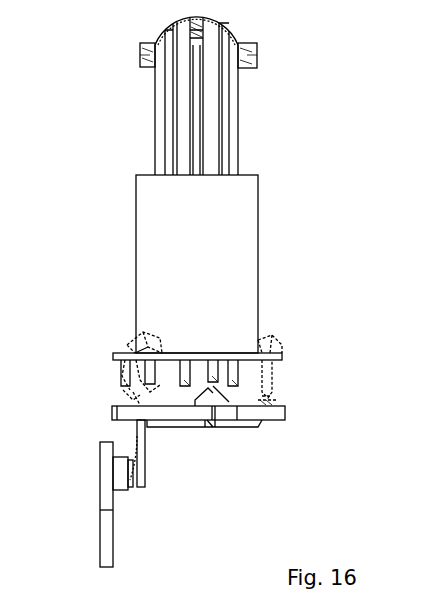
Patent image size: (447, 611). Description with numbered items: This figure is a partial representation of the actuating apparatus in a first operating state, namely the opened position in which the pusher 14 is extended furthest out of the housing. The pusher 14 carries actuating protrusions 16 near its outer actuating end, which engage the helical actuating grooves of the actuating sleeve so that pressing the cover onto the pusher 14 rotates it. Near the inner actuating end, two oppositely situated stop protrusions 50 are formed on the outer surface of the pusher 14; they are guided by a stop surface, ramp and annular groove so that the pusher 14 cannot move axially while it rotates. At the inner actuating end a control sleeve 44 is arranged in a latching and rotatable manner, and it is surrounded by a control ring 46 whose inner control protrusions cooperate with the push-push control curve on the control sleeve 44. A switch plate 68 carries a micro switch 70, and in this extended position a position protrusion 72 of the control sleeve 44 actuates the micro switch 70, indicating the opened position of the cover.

The pusher 14 is at (238, 255).
The actuating protrusions 16 is at (150, 58).
The stop protrusions 50 is at (127, 345).
The control sleeve 44 is at (270, 392).
The control ring 46 is at (280, 415).
The switch plate 68 is at (105, 528).
The micro switch 70 is at (120, 472).
The position protrusion 72 is at (142, 473).